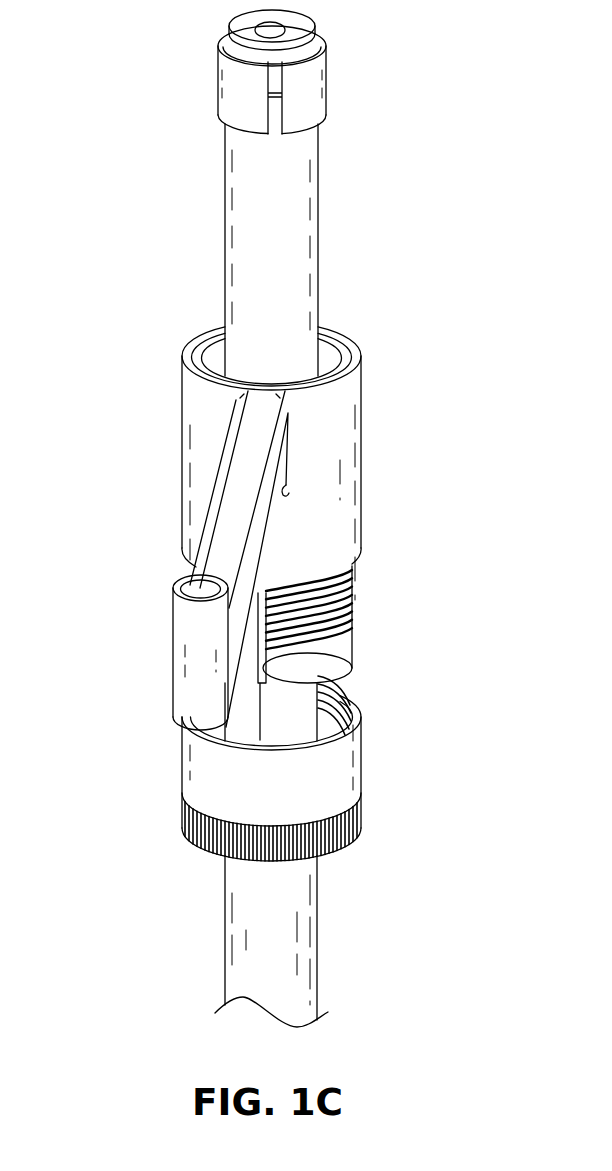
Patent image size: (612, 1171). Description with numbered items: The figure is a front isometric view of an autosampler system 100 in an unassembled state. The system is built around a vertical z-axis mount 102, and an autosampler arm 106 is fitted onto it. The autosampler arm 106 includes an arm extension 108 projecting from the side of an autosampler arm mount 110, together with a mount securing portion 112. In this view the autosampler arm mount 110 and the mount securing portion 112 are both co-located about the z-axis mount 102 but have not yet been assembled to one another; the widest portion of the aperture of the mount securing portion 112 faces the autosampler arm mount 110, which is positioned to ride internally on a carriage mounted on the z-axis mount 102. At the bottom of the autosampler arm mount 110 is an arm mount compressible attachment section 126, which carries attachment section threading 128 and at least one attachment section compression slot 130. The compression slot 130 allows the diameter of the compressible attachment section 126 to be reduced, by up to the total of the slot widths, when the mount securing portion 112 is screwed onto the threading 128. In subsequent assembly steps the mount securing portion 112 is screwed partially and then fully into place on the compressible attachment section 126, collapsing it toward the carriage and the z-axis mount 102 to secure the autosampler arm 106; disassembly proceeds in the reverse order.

The autosampler system 100 is at (126, 170).
The z-axis mount 102 is at (308, 200).
The autosampler arm 106 is at (211, 428).
The arm extension 108 is at (205, 538).
The autosampler arm mount 110 is at (347, 436).
The mount securing portion 112 is at (348, 762).
The arm mount compressible attachment section 126 is at (364, 616).
The attachment section threading 128 is at (347, 597).
The attachment section compression slot 130 is at (338, 661).